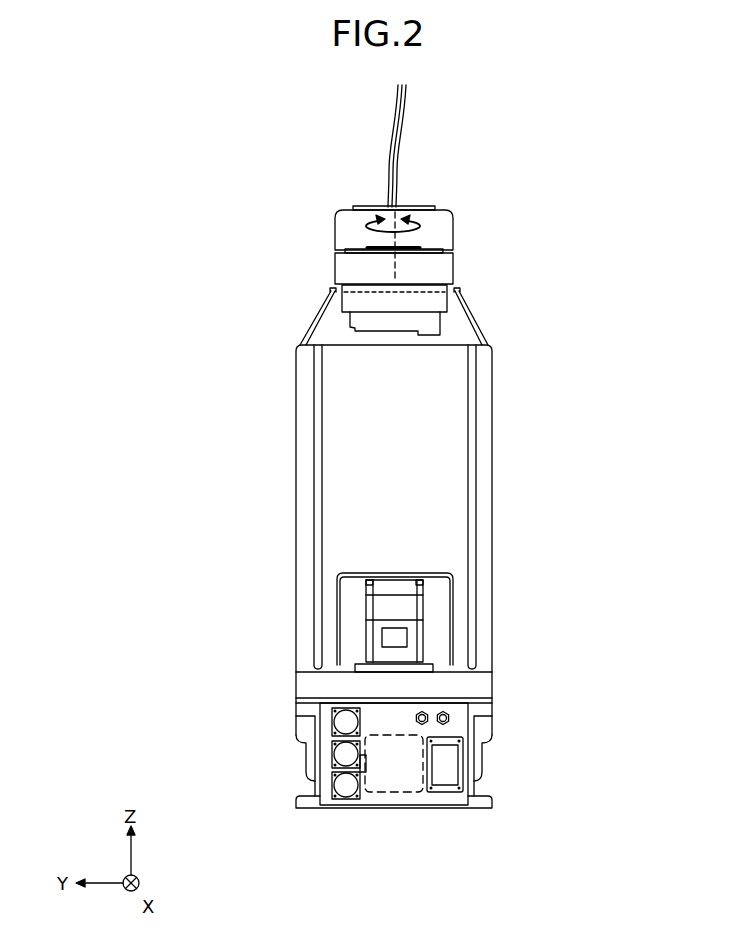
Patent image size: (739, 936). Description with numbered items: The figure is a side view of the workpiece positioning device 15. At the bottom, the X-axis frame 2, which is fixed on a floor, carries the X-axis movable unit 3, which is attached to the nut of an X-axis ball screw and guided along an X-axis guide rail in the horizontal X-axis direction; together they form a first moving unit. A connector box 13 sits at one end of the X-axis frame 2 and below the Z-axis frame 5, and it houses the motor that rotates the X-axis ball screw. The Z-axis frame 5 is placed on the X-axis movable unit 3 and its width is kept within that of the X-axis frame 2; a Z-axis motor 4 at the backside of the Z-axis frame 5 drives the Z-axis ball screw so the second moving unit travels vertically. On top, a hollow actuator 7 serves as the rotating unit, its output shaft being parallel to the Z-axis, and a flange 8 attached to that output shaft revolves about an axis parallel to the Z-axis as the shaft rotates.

The X-axis frame 2 is at (492, 798).
The X-axis movable unit 3 is at (482, 750).
The Z-axis motor 4 is at (398, 605).
The Z-axis frame 5 is at (492, 476).
The hollow actuator 7 is at (365, 270).
The flange 8 is at (425, 230).
The connector box 13 is at (455, 708).
The workpiece positioning device 15 is at (587, 340).